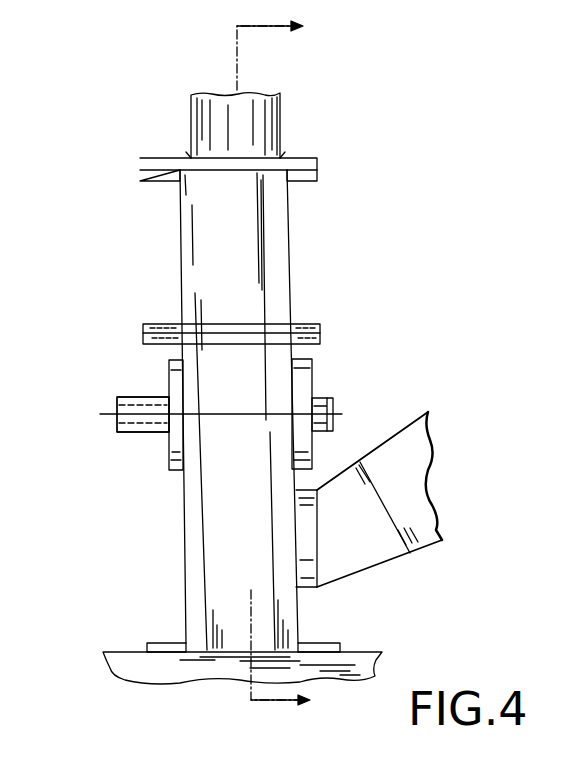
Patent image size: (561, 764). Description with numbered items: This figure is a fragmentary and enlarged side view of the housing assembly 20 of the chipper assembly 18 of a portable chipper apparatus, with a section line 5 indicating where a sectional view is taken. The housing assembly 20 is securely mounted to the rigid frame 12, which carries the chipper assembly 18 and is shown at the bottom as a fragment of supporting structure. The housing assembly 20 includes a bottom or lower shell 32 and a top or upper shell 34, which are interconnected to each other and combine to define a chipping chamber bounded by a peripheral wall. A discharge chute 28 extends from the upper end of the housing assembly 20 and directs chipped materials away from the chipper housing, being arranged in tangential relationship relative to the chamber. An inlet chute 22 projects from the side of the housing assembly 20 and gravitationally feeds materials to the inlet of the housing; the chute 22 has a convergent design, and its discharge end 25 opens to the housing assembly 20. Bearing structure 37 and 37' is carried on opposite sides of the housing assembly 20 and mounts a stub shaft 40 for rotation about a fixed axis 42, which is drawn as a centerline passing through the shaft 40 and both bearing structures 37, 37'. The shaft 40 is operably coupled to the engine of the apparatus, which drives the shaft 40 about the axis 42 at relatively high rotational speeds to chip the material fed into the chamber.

The section line 5 is at (258, 372).
The rigid frame 12 is at (173, 660).
The chipper assembly 18 is at (80, 270).
The housing assembly 20 is at (148, 562).
The inlet chute 22 is at (404, 546).
The discharge end 25 is at (345, 567).
The discharge chute 28 is at (250, 118).
The lower shell 32 is at (200, 586).
The upper shell 34 is at (273, 248).
The bearing structure 37 is at (149, 435).
The bearing structure 37' is at (340, 409).
The stub shaft 40 is at (128, 436).
The fixed axis 42 is at (140, 413).